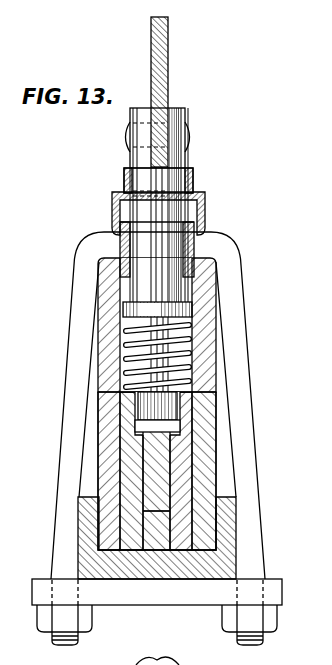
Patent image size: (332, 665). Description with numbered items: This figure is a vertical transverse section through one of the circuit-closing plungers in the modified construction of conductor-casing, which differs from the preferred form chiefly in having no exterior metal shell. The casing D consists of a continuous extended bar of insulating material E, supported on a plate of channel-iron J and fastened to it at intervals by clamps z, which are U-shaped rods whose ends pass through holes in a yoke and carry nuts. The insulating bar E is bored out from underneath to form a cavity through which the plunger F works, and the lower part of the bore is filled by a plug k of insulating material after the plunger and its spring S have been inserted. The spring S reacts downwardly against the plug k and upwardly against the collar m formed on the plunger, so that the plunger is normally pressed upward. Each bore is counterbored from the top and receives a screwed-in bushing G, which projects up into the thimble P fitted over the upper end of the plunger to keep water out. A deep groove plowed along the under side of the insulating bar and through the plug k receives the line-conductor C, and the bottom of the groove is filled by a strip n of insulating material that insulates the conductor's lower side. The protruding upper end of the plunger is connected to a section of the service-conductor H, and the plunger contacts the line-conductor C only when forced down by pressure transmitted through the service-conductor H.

The service-conductor H is at (170, 83).
The plunger F is at (128, 158).
The thimble P is at (205, 200).
The bushing G is at (128, 257).
The insulating material E is at (97, 431).
The casing D is at (212, 414).
The spring S is at (193, 343).
The line-conductor C is at (160, 488).
The plug k is at (156, 471).
The strip of insulating material n is at (156, 524).
The collar m is at (157, 309).
The clamp z is at (53, 497).
The channel-iron plate J is at (236, 562).